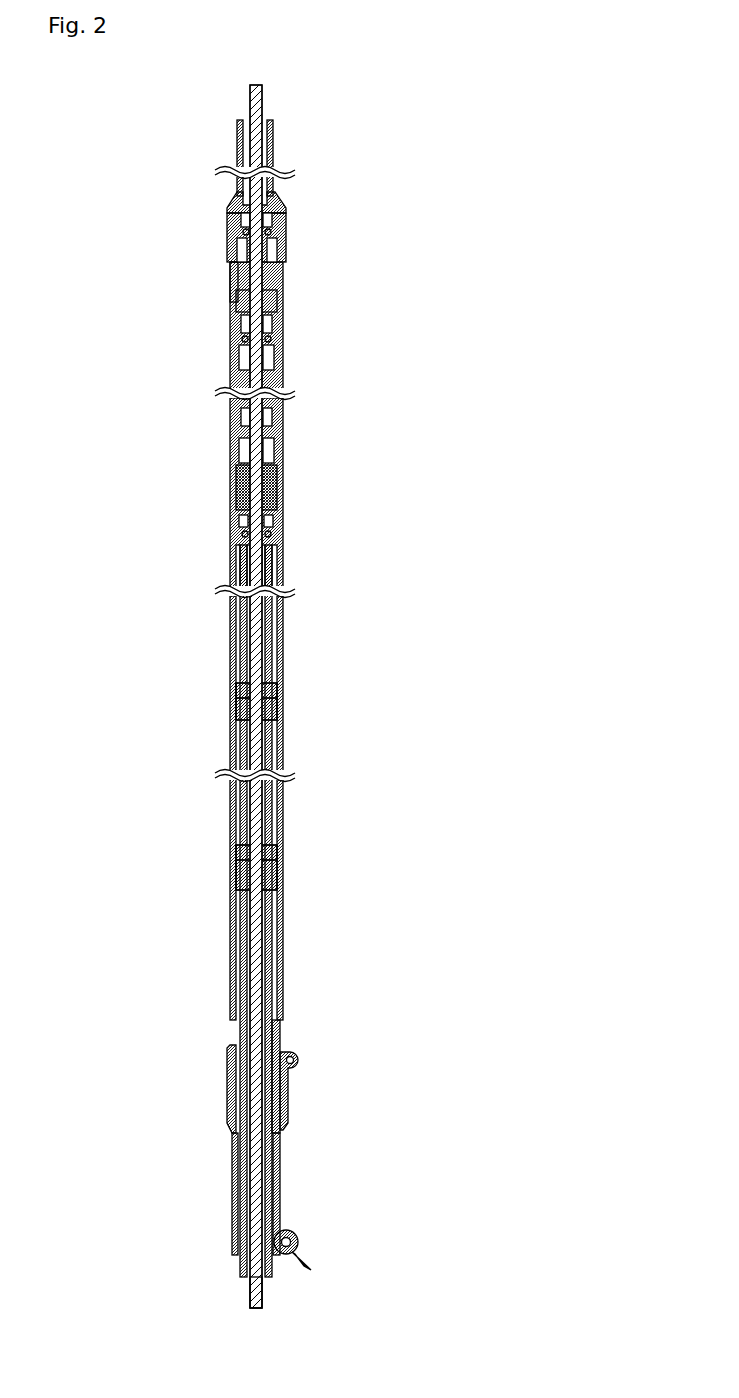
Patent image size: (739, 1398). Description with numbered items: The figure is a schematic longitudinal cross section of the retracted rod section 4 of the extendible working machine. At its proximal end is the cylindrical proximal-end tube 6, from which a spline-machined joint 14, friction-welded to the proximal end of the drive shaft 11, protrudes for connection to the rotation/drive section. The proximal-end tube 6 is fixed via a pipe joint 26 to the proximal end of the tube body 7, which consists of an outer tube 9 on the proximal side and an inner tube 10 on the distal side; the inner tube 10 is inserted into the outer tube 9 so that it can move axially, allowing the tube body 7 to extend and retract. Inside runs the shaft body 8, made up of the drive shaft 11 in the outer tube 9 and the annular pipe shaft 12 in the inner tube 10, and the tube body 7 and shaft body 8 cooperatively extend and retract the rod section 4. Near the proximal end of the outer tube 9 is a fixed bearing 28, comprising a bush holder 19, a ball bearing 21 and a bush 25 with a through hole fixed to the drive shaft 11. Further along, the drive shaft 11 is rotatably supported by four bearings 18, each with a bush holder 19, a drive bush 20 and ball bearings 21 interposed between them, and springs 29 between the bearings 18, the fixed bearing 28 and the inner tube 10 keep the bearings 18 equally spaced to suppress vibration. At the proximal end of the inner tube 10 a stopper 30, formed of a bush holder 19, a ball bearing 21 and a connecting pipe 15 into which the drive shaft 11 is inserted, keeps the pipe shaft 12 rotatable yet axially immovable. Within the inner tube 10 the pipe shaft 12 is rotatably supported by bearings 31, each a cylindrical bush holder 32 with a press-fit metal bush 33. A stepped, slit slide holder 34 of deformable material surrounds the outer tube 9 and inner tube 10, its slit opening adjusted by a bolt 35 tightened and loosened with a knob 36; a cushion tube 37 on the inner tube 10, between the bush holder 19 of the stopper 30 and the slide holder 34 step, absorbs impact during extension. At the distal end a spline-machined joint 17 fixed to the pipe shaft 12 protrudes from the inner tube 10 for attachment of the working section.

The rod section 4 is at (478, 417).
The proximal-end tube 6 is at (238, 137).
The tube body 7 is at (328, 842).
The shaft body 8 is at (323, 1051).
The outer tube 9 is at (283, 832).
The inner tube 10 is at (283, 850).
The drive shaft 11 is at (283, 996).
The pipe shaft 12 is at (329, 1078).
The joint 14 is at (262, 100).
The connecting pipe 15 is at (283, 508).
The joint 17 is at (262, 1292).
The bearing 18 is at (328, 327).
The bush holder 19 is at (283, 252).
The drive bush 20 is at (283, 308).
The ball bearing 21 is at (275, 222).
The bush 25 is at (285, 200).
The pipe joint 26 is at (236, 197).
The fixed bearing 28 is at (327, 210).
The spring 29 is at (232, 287).
The stopper 30 is at (328, 494).
The bearing 31 is at (331, 705).
The bush holder 32 is at (283, 690).
The metal bush 33 is at (283, 706).
The slide holder 34 is at (281, 1176).
The bolt 35 is at (296, 1234).
The knob 36 is at (300, 1255).
The cushion tube 37 is at (233, 982).